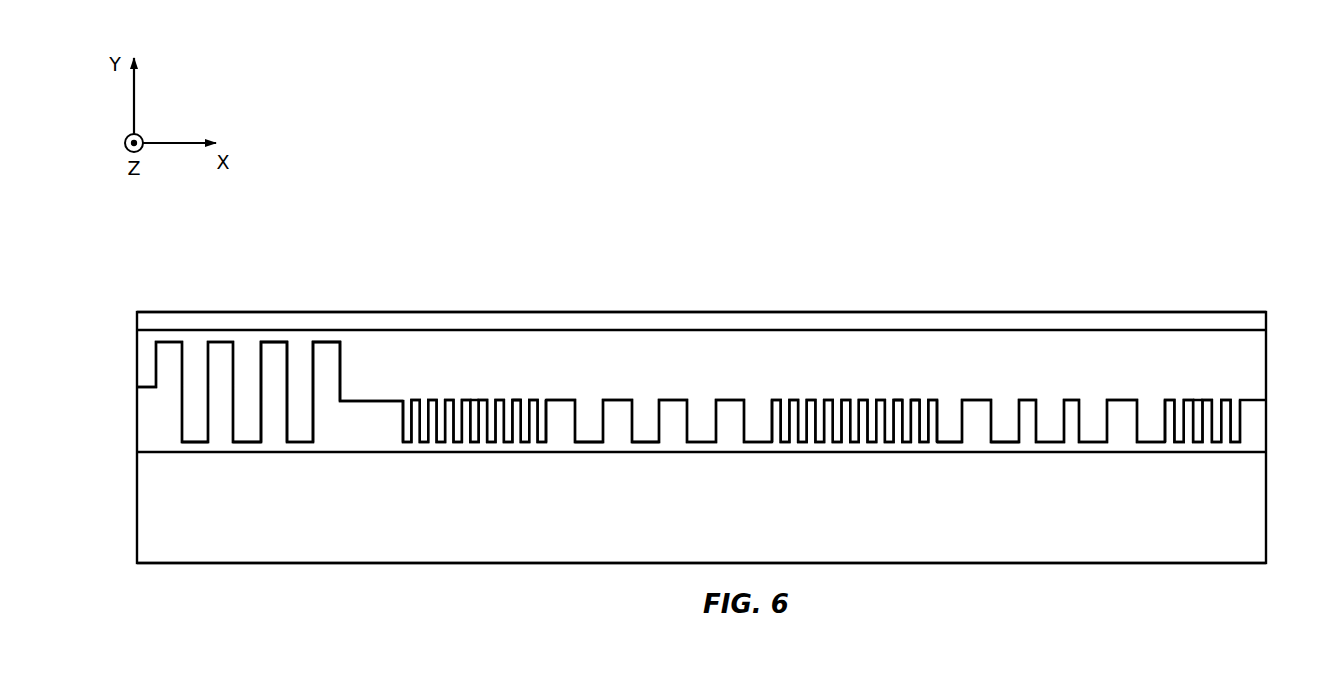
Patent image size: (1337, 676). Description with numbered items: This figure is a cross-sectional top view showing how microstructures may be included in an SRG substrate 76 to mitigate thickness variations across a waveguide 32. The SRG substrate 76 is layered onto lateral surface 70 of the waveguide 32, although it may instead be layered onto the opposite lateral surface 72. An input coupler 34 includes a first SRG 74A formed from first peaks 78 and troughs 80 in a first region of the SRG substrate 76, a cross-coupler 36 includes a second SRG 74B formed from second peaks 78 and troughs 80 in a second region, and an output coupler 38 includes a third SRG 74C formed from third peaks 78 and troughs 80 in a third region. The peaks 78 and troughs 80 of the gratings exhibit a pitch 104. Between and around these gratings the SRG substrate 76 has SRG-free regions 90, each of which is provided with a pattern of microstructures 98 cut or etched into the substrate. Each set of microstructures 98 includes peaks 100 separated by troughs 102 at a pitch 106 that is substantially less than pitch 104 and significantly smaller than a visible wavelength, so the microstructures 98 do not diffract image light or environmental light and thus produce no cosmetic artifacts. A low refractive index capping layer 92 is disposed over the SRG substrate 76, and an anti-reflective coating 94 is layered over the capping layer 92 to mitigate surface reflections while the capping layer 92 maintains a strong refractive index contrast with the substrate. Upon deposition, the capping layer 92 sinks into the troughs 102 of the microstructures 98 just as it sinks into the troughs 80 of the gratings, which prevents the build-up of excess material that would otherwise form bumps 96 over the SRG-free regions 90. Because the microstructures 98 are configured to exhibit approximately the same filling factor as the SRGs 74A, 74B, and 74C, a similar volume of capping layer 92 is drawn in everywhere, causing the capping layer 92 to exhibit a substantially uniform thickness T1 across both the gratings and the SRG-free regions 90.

The waveguide 32 is at (1262, 508).
The input coupler 34 is at (405, 248).
The cross-coupler 36 is at (784, 248).
The output coupler 38 is at (1192, 280).
The lateral surface 70 is at (160, 458).
The lateral surface 72 is at (357, 558).
The first SRG 74A is at (274, 459).
The second SRG 74B is at (680, 465).
The third SRG 74C is at (1032, 462).
The SRG substrate 76 is at (1262, 428).
The peaks 78 is at (328, 353).
The troughs 80 is at (196, 432).
The SRG-free regions 90 is at (582, 458).
The capping layer 92 is at (1262, 345).
The anti-reflective coating (ARC) 94 is at (1262, 322).
The bumps 96 is at (592, 276).
The microstructures 98 is at (479, 379).
The peaks 100 is at (521, 399).
The troughs 102 is at (426, 445).
The pitch 104 is at (222, 340).
The pitch 106 is at (463, 400).
The thickness T1 is at (418, 333).